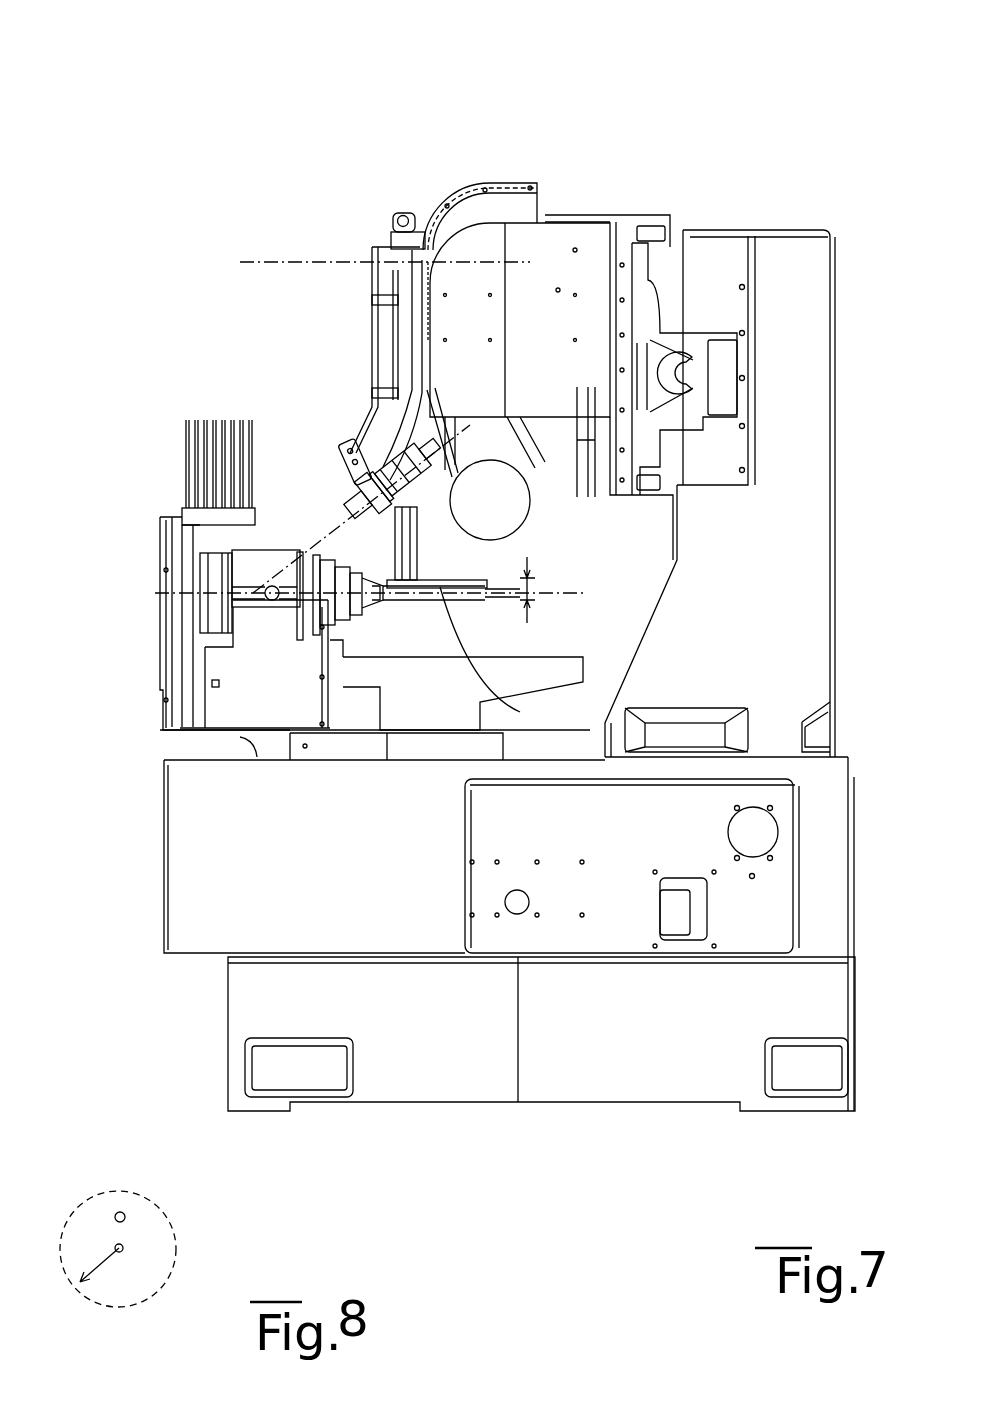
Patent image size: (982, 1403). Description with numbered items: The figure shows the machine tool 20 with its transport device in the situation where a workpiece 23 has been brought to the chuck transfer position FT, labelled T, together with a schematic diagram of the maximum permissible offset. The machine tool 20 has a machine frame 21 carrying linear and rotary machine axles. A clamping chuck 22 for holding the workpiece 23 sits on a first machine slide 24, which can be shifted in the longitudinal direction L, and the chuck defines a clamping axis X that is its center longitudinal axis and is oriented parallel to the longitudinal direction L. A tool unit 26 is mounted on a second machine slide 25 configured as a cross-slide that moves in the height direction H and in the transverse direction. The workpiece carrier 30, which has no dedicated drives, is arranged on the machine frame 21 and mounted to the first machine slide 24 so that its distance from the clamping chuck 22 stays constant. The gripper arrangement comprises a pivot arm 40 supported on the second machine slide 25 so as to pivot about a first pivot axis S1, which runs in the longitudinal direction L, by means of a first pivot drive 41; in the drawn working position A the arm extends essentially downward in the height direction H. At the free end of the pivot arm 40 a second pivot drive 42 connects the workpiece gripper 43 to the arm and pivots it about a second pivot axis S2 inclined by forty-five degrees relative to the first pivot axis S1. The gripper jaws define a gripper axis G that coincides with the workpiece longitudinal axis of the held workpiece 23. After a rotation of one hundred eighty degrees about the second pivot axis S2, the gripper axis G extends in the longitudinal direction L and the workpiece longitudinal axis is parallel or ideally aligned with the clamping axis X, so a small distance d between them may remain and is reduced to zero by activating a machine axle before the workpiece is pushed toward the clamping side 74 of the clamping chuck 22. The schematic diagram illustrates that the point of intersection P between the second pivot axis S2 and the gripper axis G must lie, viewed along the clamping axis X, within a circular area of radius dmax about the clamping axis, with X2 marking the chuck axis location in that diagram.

In FIG. 7, the machine tool 20 is at (805, 78).
In FIG. 7, the machine frame 21 is at (830, 560).
In FIG. 7, the clamping chuck 22 is at (352, 605).
In FIG. 7, the workpiece 23 is at (210, 420).
In FIG. 7, the first machine slide 24 is at (352, 760).
In FIG. 7, the second machine slide 25 is at (592, 240).
In FIG. 7, the tool unit 26 is at (448, 476).
In FIG. 7, the workpiece carrier 30 is at (130, 498).
In FIG. 7, the pivot arm 40 is at (372, 323).
In FIG. 7, the first pivot drive 41 is at (424, 205).
In FIG. 7, the second pivot drive 42 is at (416, 468).
In FIG. 7, the workpiece gripper 43 is at (397, 553).
In FIG. 7, the clamping side 74 is at (381, 599).
In FIG. 7, the working position A is at (368, 195).
In FIG. 7, the first pivot axis S1 is at (265, 262).
In FIG. 7, the second pivot axis S2 is at (300, 553).
In FIG. 7, the chuck transfer position T is at (445, 560).
In FIG. 7, the gripper axis G is at (548, 581).
In FIG. 7, the clamping axis X is at (456, 592).
In FIG. 7, the height direction H is at (115, 855).
In FIG. 7, the longitudinal direction L is at (100, 973).
In FIG. 8, the point of intersection P is at (120, 1211).
In FIG. 8, the rotated X axis X2 is at (114, 1247).
In FIG. 8, the maximum distance dmax is at (105, 1265).
In FIG. 7, the distance d is at (540, 589).